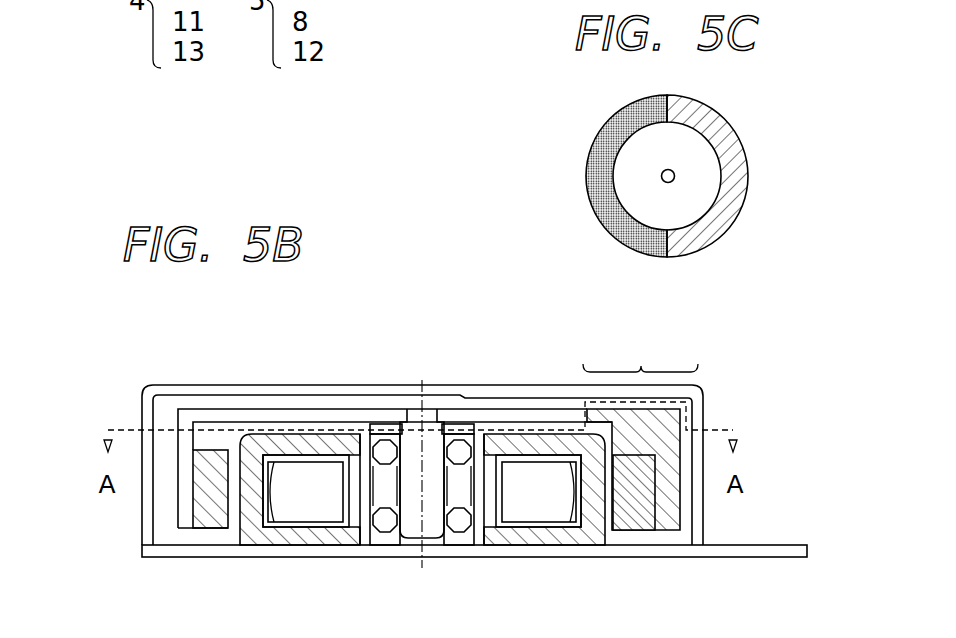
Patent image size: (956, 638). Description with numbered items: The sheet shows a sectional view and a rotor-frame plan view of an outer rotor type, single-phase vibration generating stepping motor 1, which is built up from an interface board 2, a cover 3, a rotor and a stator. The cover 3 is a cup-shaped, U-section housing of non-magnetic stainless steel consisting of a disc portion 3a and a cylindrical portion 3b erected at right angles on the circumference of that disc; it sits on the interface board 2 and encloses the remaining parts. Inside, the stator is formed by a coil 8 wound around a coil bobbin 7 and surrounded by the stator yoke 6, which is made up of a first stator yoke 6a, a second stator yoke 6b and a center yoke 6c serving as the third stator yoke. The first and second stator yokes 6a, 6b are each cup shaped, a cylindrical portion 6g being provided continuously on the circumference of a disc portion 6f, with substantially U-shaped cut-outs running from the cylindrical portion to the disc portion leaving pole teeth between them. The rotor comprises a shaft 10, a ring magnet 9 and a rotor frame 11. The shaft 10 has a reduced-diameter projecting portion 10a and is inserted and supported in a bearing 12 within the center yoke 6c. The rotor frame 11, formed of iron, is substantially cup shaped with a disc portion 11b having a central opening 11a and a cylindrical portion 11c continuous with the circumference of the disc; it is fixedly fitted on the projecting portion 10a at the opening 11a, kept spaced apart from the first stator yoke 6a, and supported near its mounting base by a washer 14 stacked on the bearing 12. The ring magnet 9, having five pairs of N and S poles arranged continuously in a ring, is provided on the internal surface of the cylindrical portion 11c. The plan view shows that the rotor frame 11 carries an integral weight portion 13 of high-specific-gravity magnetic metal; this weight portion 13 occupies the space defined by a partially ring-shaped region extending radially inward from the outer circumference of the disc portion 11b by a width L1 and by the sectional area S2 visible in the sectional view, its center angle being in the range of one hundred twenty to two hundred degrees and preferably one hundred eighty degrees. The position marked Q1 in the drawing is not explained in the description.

In FIG. 5B, the vibration generating stepping motor 1 is at (136, 342).
In FIG. 5B, the interface board 2 is at (790, 558).
In FIG. 5B, the cover 3 is at (790, 360).
In FIG. 5B, the disc portion 3a is at (650, 393).
In FIG. 5B, the cylindrical portion 3b is at (698, 416).
In FIG. 5B, the stator yoke 6 is at (320, 440).
In FIG. 5B, the first stator yoke 6a is at (562, 447).
In FIG. 5B, the second stator yoke 6b is at (567, 537).
In FIG. 5B, the center yoke 6c is at (477, 538).
In FIG. 5B, the disc portion 6f is at (280, 432).
In FIG. 5B, the cylindrical portion 6g is at (239, 498).
In FIG. 5B, the coil bobbin 7 is at (498, 527).
In FIG. 5B, the coil 8 is at (533, 508).
In FIG. 5B, the ring magnet 9 is at (635, 503).
In FIG. 5B, the shaft 10 is at (430, 538).
In FIG. 5B, the projecting portion 10a is at (442, 410).
In FIG. 5C, the rotor frame 11 is at (600, 125).
In FIG. 5B, the rotor frame 11 is at (352, 392).
In FIG. 5B, the opening 11a is at (407, 409).
In FIG. 5B, the disc portion 11b is at (218, 407).
In FIG. 5B, the cylindrical portion 11c is at (183, 458).
In FIG. 5B, the bearing 12 is at (385, 528).
In FIG. 5C, the weight portion 13 is at (728, 113).
In FIG. 5B, the weight portion 13 is at (672, 448).
In FIG. 5B, the washer 14 is at (386, 428).
In FIG. 5B, the gap position Q1 is at (586, 407).
In FIG. 5B, the width L1 is at (640, 354).
In FIG. 5B, the sectional area S2 is at (703, 475).